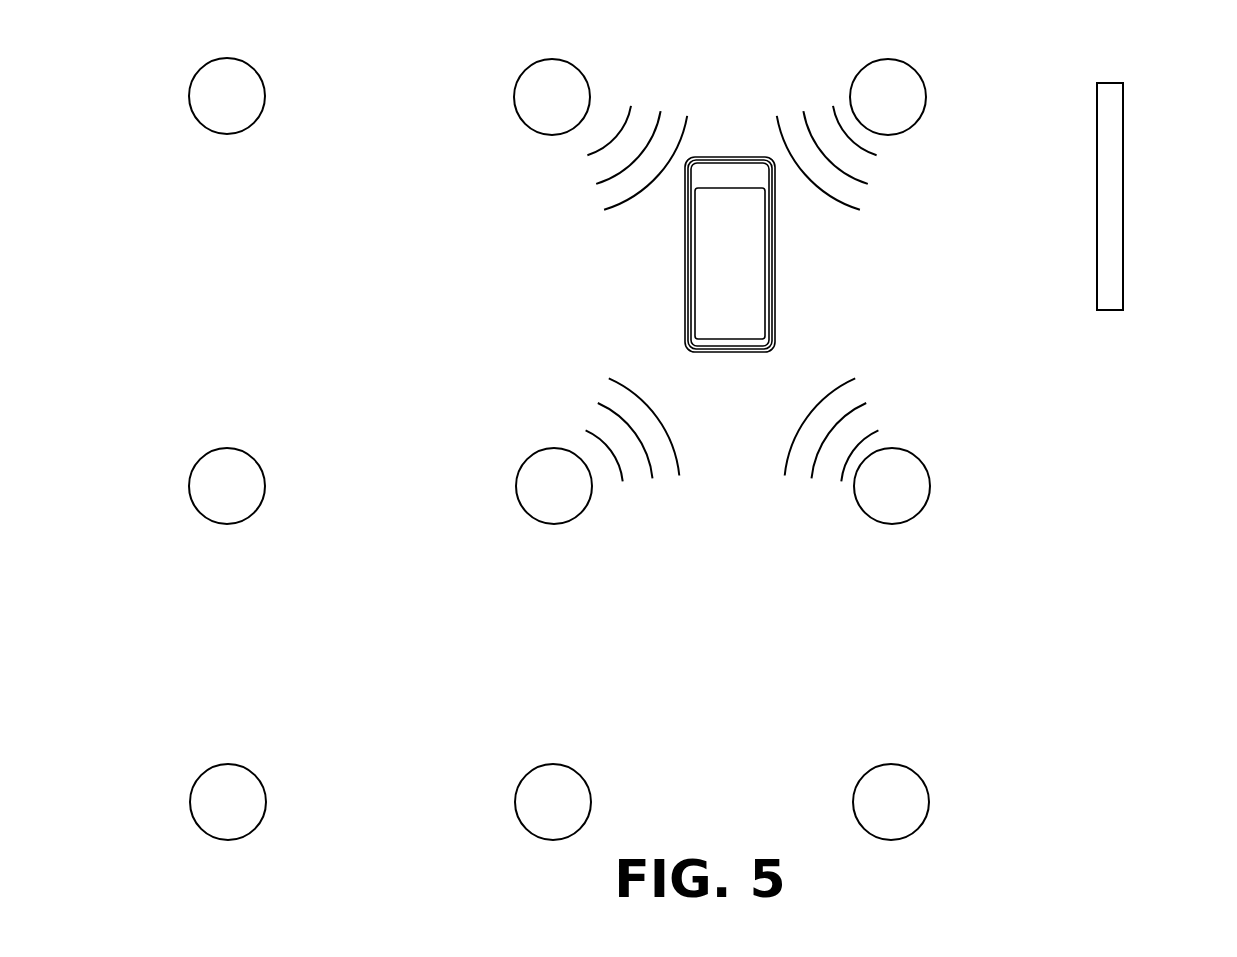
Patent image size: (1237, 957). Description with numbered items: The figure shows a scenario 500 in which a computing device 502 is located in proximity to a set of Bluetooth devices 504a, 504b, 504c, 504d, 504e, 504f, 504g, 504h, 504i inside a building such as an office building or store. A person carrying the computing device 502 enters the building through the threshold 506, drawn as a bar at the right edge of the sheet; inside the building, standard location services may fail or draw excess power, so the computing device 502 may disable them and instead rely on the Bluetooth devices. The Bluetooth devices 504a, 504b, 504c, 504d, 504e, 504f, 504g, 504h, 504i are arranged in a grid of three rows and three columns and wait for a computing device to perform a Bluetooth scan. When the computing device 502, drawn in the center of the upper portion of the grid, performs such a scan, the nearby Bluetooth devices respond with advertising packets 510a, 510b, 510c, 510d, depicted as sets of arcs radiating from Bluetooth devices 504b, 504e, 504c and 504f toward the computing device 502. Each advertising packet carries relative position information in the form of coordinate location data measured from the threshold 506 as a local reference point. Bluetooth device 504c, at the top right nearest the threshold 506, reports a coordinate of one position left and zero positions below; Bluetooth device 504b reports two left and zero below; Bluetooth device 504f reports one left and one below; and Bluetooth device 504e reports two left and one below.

The scenario 500 is at (157, 67).
The computing device 502 is at (733, 282).
The Bluetooth device 504a is at (227, 96).
The Bluetooth device 504b is at (552, 97).
The Bluetooth device 504c is at (888, 97).
The Bluetooth device 504d is at (227, 486).
The Bluetooth device 504e is at (554, 486).
The Bluetooth device 504f is at (892, 486).
The Bluetooth device 504g is at (228, 802).
The Bluetooth device 504h is at (553, 802).
The Bluetooth device 504i is at (891, 802).
The threshold 506 is at (1123, 110).
The advertising packet 510a is at (589, 154).
The advertising packet 510b is at (604, 397).
The advertising packet 510c is at (876, 156).
The advertising packet 510d is at (860, 402).